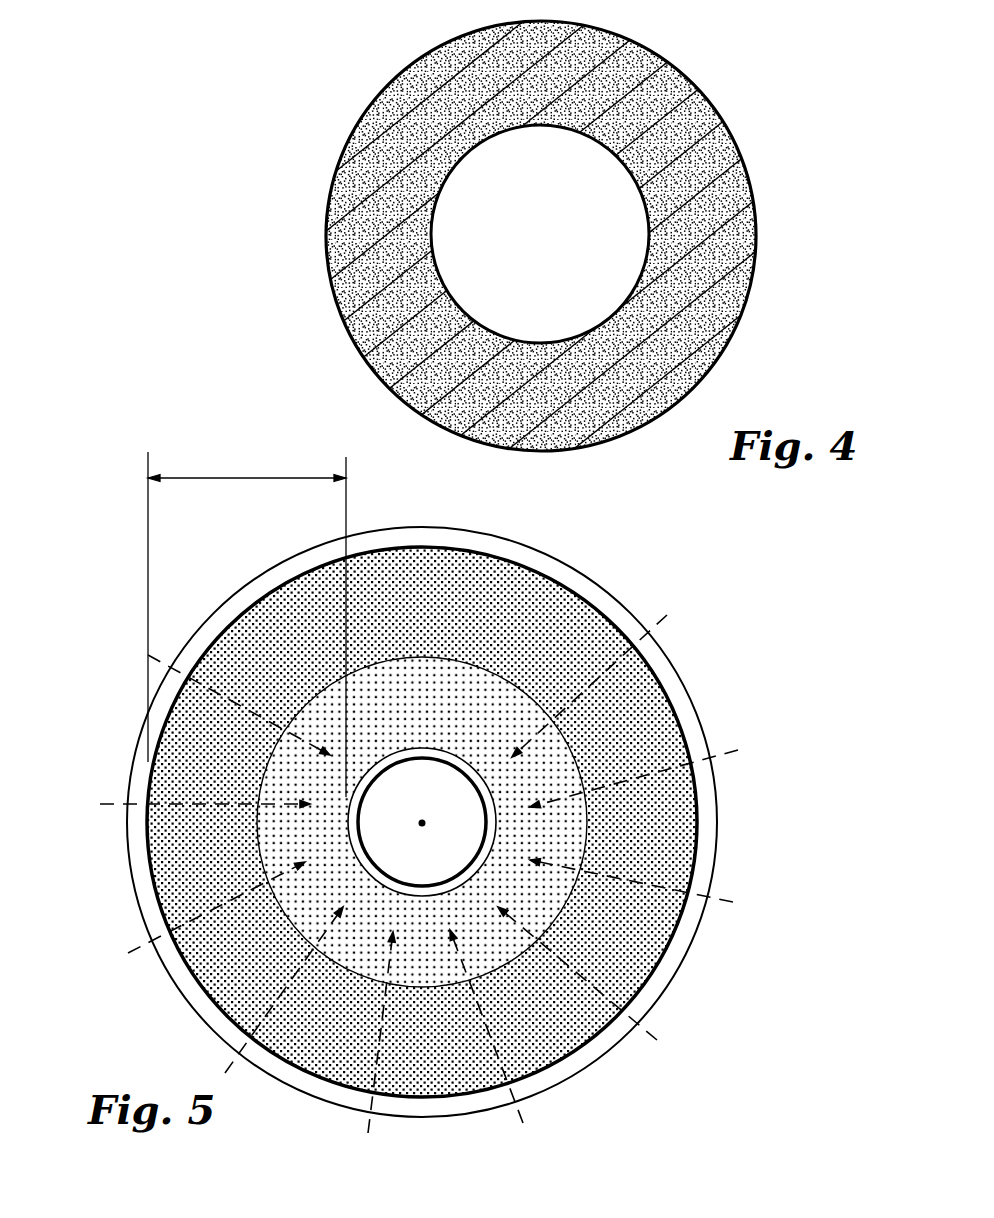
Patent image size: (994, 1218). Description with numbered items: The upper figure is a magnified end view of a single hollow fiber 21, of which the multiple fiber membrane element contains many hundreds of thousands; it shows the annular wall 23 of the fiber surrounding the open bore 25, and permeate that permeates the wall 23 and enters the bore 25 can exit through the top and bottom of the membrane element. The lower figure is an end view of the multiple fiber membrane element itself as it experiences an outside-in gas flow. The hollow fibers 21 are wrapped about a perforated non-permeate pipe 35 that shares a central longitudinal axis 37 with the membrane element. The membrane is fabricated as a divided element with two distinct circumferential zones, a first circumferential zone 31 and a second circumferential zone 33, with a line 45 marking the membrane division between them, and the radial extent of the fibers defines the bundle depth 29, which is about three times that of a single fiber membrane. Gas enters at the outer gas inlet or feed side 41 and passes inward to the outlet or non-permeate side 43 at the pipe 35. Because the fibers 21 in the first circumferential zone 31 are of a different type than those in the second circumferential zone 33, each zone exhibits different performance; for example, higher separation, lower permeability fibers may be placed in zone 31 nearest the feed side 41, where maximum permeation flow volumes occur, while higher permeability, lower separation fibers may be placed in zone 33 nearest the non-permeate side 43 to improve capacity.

In FIG. 4, the hollow fiber 21 is at (764, 315).
In FIG. 4, the wall of hollow fiber 23 is at (713, 102).
In FIG. 4, the bore of hollow fiber 25 is at (582, 285).
In FIG. 5, the bundle depth 29 is at (227, 478).
In FIG. 5, the first circumferential zone of fibers 31 is at (559, 618).
In FIG. 5, the second circumferential zone of fibers 33 is at (483, 953).
In FIG. 5, the perforated non-permeate pipe 35 is at (489, 800).
In FIG. 5, the central longitudinal axis 37 is at (422, 823).
In FIG. 5, the gas inlet or feed side 41 is at (140, 738).
In FIG. 5, the outlet or non-permeate side 43 is at (388, 872).
In FIG. 5, the membrane division 45 is at (572, 907).